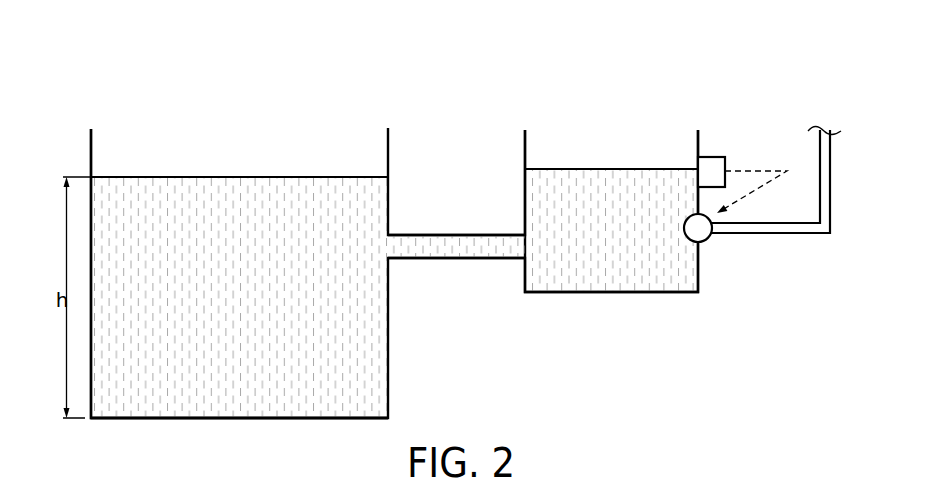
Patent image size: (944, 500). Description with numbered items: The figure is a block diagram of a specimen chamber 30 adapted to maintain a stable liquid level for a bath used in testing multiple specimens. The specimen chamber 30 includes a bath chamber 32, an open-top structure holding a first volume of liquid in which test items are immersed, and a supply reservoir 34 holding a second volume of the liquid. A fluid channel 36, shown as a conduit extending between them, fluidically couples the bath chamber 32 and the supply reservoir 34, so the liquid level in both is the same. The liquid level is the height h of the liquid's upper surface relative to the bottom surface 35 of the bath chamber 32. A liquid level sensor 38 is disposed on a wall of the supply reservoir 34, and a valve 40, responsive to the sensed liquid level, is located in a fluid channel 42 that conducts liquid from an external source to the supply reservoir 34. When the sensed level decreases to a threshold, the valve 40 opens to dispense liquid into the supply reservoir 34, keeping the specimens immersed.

The specimen chamber 30 is at (122, 101).
The bath chamber 32 is at (41, 210).
The supply reservoir 34 is at (506, 184).
The bottom surface 35 is at (366, 406).
The fluid channel 36 is at (458, 260).
The liquid level sensor 38 is at (710, 157).
The valve 40 is at (707, 241).
The fluid channel 42 is at (803, 234).